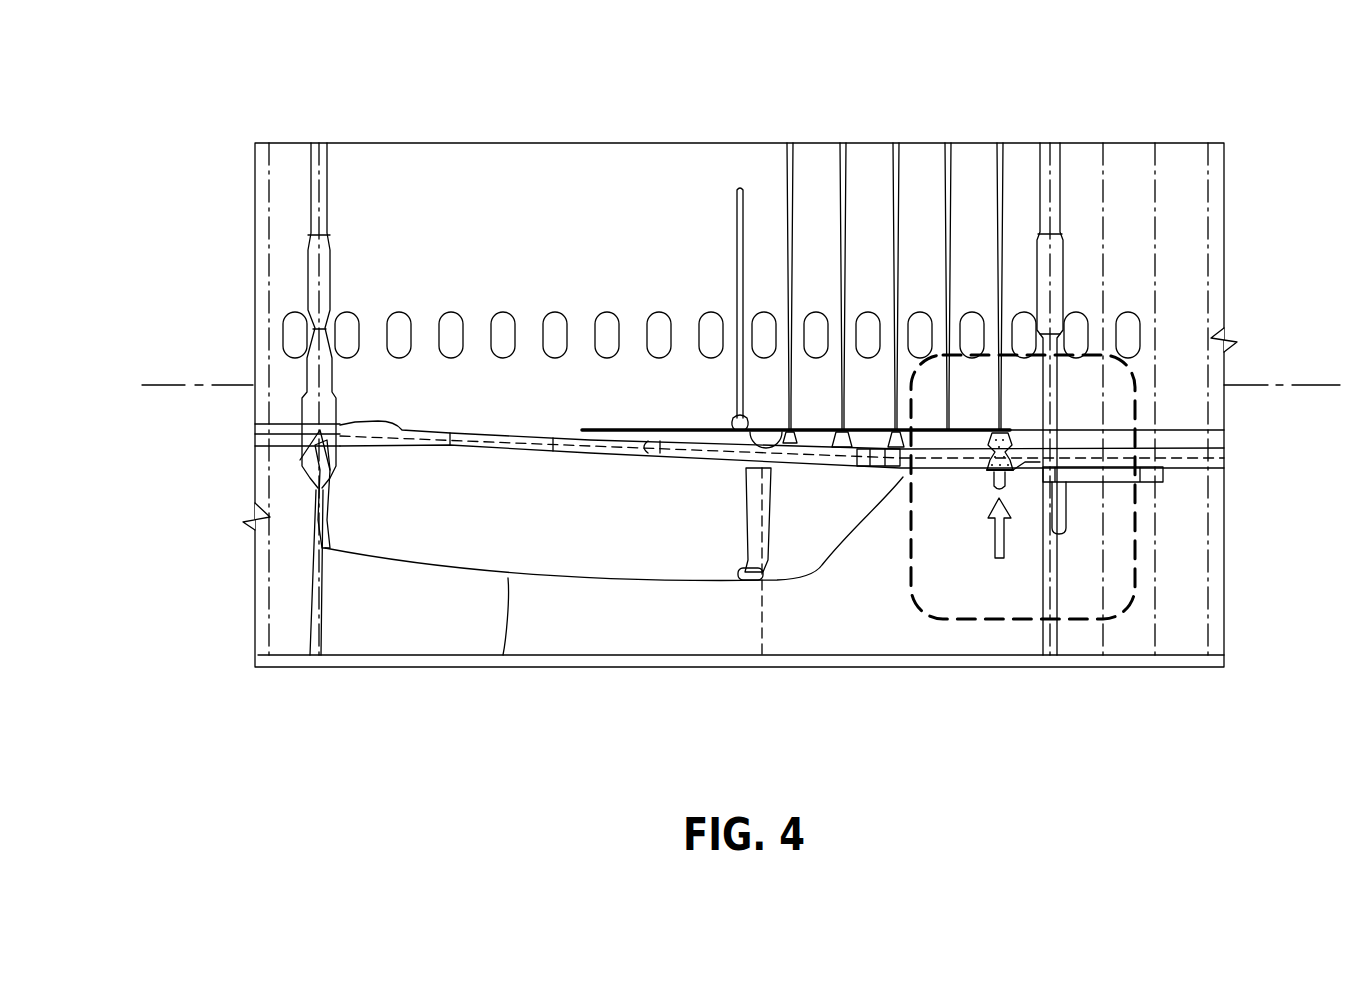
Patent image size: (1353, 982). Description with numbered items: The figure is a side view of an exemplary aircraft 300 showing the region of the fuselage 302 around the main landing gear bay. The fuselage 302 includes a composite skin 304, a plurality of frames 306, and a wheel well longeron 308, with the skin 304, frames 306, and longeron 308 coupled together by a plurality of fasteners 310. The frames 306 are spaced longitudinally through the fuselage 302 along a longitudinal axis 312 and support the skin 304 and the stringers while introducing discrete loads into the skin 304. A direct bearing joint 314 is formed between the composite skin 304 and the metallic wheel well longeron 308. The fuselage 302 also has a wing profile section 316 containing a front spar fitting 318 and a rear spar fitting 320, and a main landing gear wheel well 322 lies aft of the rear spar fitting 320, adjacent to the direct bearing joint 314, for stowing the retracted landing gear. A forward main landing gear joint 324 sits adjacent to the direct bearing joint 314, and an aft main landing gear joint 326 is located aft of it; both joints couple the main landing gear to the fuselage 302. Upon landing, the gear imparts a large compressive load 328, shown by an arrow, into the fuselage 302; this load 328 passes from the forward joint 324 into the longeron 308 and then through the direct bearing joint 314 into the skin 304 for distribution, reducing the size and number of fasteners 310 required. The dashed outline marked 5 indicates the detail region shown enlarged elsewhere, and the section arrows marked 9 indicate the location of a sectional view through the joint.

The aircraft 300 is at (185, 182).
The fuselage 302 is at (255, 292).
The composite skin 304 is at (1020, 385).
The frames 306 is at (1037, 165).
The wheel well longeron 308 is at (970, 462).
The fasteners 310 is at (1012, 440).
The longitudinal axis 312 is at (172, 386).
The direct bearing joint 314 is at (1015, 456).
The wing profile section 316 is at (505, 655).
The front spar fitting 318 is at (327, 550).
The rear spar fitting 320 is at (752, 580).
The main landing gear wheel well 322 is at (893, 552).
The forward main landing gear joint 324 is at (1010, 475).
The aft main landing gear joint 326 is at (1057, 485).
The compressive load 328 is at (995, 553).
The detail view region of FIG. 5 is at (1167, 417).
The section line 9- 9 is at (1092, 645).